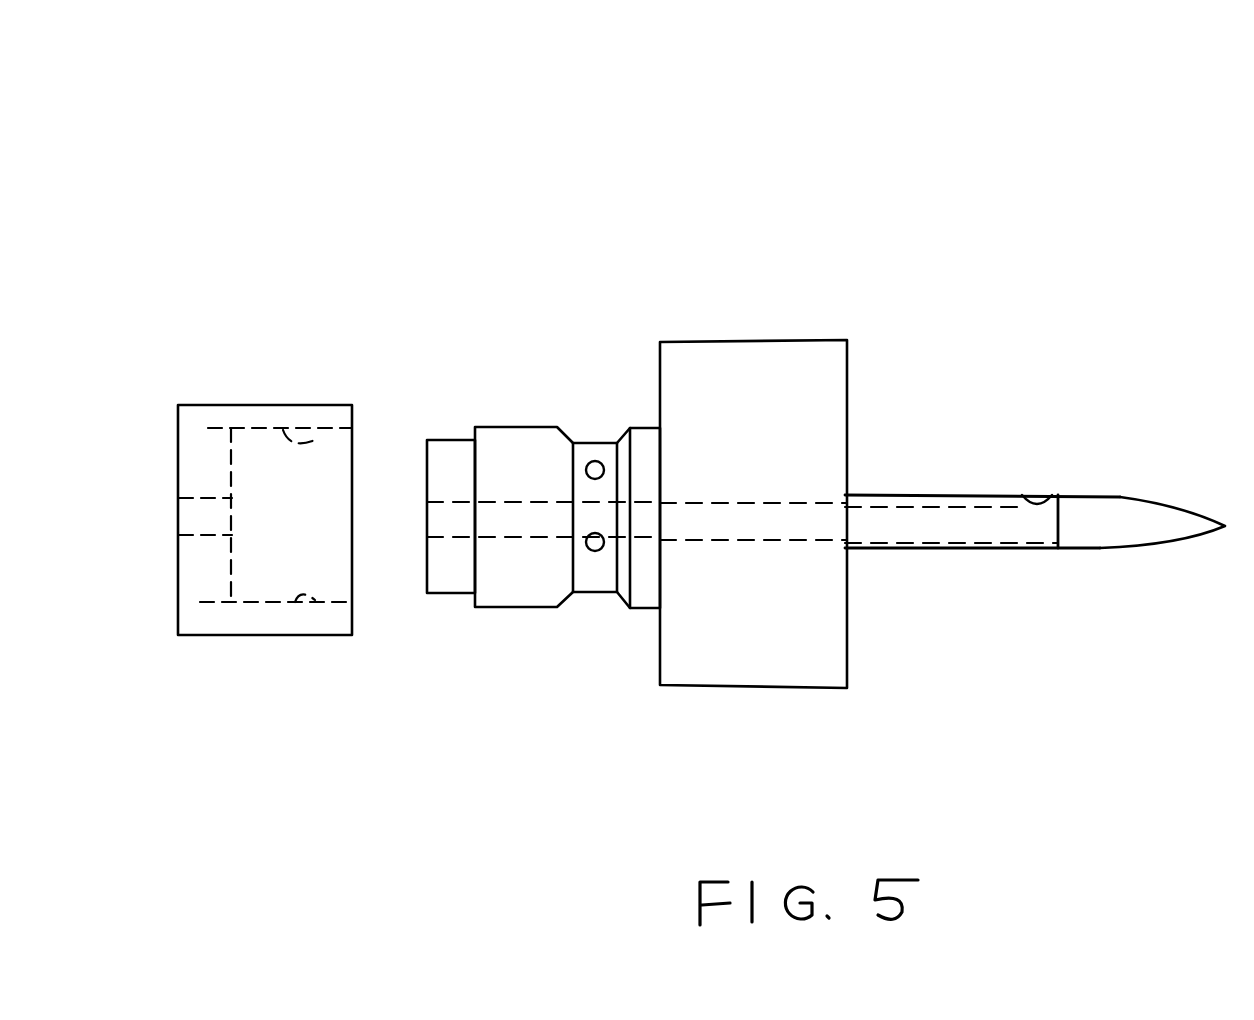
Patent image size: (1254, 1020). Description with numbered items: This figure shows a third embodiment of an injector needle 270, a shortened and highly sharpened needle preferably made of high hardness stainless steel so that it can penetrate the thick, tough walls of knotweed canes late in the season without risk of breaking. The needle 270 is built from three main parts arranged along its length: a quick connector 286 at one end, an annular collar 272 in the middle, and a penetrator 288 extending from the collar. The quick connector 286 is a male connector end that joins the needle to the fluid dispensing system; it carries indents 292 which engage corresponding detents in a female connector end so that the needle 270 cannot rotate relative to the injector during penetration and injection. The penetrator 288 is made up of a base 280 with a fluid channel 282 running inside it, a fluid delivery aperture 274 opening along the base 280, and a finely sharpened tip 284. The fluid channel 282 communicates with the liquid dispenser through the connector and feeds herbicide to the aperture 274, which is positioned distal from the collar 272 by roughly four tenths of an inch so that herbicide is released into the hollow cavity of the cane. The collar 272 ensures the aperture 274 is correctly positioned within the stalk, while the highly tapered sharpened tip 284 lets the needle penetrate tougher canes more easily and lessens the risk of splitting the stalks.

The injector needle 270 is at (967, 112).
The collar 272 is at (752, 327).
The fluid delivery aperture 274 is at (1037, 490).
The base 280 is at (1076, 562).
The fluid channel 282 is at (895, 530).
The sharpened tip 284 is at (1241, 508).
The quick connector 286 is at (490, 417).
The penetrator 288 is at (1253, 688).
The indents 292 is at (592, 447).